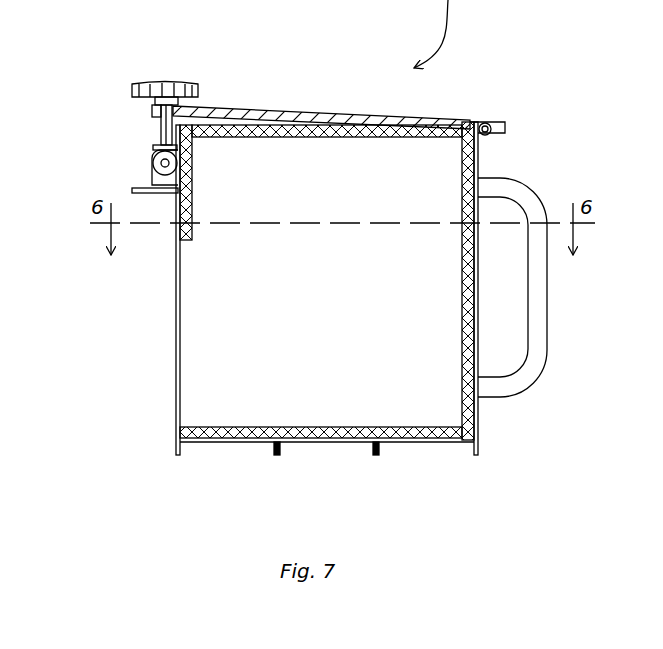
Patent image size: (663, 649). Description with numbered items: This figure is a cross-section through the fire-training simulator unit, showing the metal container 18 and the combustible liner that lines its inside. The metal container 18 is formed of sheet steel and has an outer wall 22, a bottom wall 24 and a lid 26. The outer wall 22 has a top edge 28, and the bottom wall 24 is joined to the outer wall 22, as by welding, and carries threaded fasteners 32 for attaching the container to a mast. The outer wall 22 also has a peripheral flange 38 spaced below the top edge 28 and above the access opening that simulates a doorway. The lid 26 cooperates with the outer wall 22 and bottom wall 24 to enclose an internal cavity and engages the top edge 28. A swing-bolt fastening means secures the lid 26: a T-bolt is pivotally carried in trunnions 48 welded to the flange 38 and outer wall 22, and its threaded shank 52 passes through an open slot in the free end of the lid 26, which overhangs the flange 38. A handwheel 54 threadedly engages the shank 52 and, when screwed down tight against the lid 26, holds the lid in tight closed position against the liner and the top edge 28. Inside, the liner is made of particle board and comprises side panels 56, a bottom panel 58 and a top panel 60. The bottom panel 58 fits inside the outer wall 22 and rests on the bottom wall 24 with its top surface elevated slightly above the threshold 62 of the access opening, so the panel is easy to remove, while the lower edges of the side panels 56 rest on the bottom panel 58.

The metal container 18 is at (156, 379).
The outer wall 22 is at (478, 328).
The bottom wall 24 is at (248, 443).
The lid 26 is at (265, 106).
The top edge 28 is at (472, 125).
The threaded fasteners 32 is at (377, 448).
The peripheral flange 38 is at (142, 187).
The trunnions 48 is at (165, 180).
The threaded shank 52 is at (160, 132).
The handwheel 54 is at (168, 82).
The side panels 56 is at (462, 290).
The bottom panel 58 is at (228, 427).
The top panel 60 is at (285, 137).
The threshold 62 is at (178, 428).